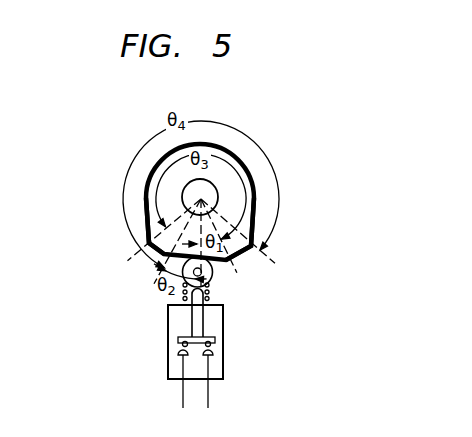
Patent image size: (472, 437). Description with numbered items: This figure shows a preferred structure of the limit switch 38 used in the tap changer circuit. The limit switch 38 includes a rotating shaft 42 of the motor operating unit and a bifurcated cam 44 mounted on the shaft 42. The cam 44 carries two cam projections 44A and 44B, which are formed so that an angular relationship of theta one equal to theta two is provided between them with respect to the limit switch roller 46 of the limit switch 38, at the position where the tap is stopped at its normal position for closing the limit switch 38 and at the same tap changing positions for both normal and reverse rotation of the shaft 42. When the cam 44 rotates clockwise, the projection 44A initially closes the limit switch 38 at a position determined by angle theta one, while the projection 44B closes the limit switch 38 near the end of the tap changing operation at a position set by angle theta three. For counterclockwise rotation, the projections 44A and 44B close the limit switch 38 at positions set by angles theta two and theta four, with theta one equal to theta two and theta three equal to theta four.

The limit switch 38 is at (224, 341).
The rotating shaft 42 is at (217, 191).
The bifurcated cam 44 is at (228, 151).
The cam projection 44A is at (234, 259).
The cam projection 44B is at (160, 254).
The limit switch roller 46 is at (213, 273).